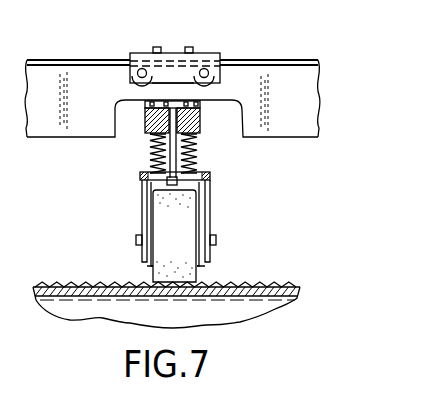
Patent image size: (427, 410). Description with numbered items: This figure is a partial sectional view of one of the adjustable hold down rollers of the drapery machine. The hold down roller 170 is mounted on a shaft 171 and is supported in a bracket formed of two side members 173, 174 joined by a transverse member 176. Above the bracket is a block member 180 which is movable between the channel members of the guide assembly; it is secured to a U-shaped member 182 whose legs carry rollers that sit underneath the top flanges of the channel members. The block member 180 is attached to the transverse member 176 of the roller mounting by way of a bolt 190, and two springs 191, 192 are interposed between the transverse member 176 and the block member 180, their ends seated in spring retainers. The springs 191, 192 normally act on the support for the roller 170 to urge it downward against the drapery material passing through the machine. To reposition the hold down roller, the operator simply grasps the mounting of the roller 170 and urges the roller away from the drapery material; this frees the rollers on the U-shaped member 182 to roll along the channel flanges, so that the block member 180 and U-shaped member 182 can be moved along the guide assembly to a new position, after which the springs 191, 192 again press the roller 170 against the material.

The hold down roller 170 is at (195, 281).
The shaft 171 is at (209, 239).
The side member 173 is at (142, 178).
The side member 174 is at (207, 210).
The transverse member 176 is at (209, 186).
The block member 180 is at (207, 97).
The U-shaped member 182 is at (206, 52).
The bolt 190 is at (197, 120).
The spring 191 is at (149, 152).
The spring 192 is at (198, 152).